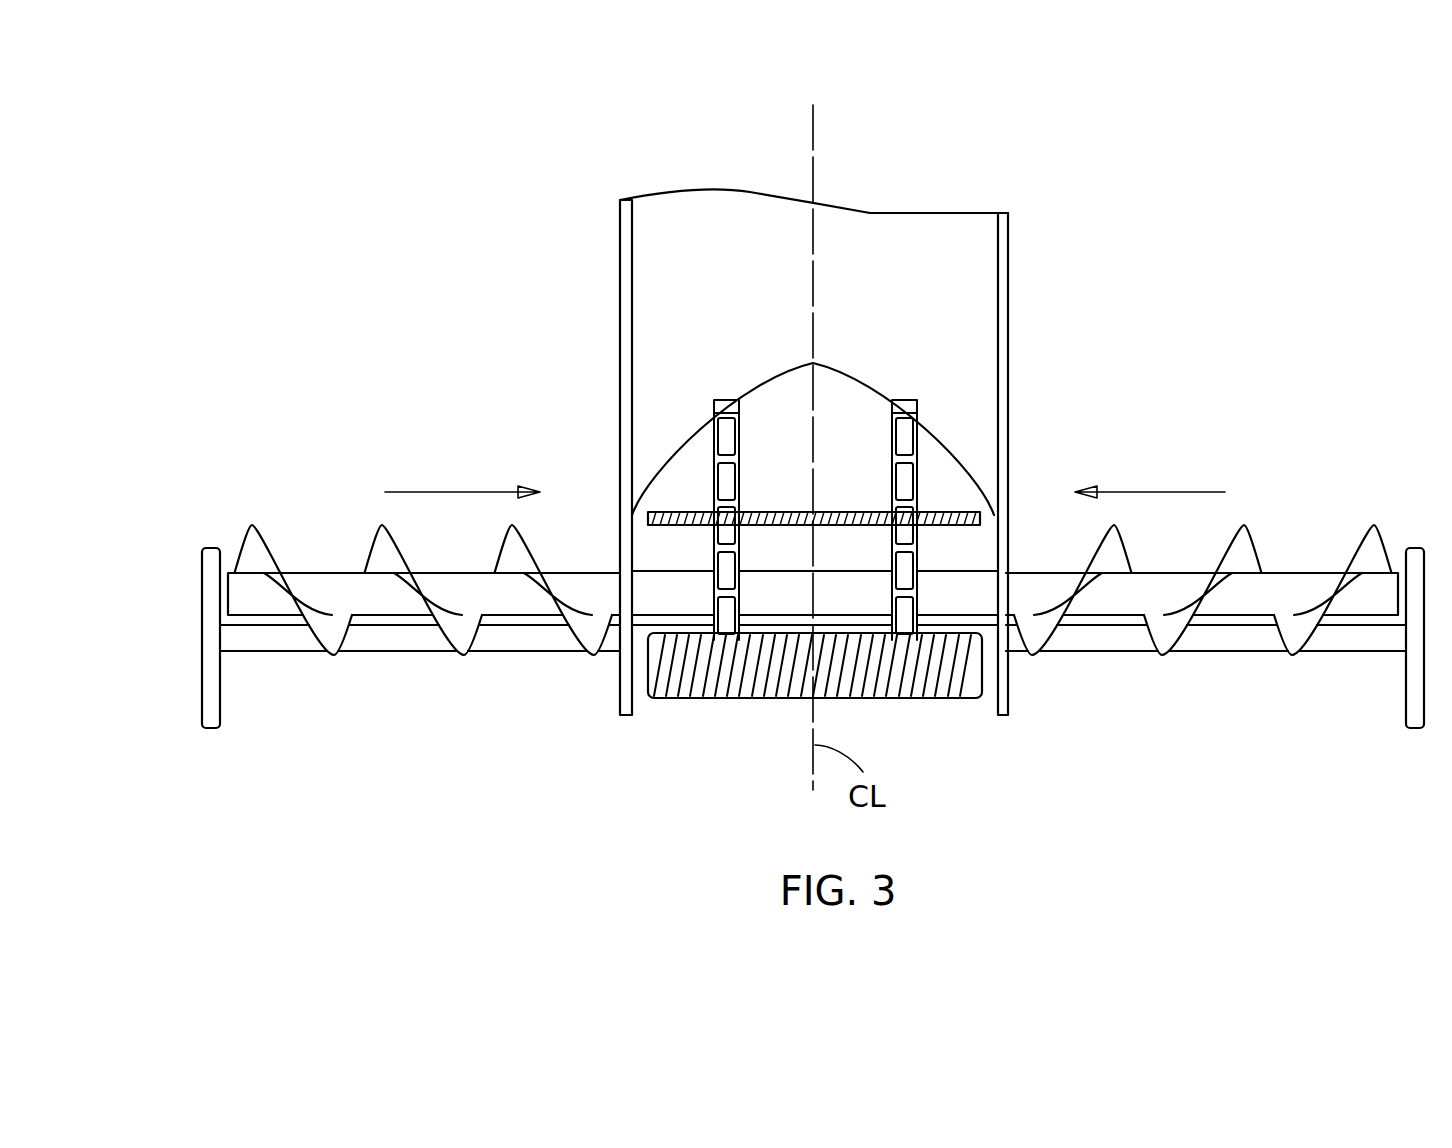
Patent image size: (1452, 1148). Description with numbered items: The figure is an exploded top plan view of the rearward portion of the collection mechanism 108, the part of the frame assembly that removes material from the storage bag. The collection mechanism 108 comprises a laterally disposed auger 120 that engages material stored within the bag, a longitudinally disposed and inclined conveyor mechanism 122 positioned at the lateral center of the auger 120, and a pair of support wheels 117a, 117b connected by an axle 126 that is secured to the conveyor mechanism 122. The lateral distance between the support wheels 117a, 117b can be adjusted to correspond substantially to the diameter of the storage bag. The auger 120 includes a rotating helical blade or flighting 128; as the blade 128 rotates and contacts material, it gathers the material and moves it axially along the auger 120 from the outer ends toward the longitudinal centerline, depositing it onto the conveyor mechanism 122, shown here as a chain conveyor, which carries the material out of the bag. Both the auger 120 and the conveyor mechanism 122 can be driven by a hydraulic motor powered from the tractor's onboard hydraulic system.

The collection mechanism 108 is at (1240, 340).
The support wheel 117a is at (202, 703).
The support wheel 117b is at (1405, 717).
The auger 120 is at (1322, 583).
The conveyor mechanism 122 is at (777, 412).
The axle 126 is at (1112, 640).
The helical blade or flighting 128 is at (1315, 645).